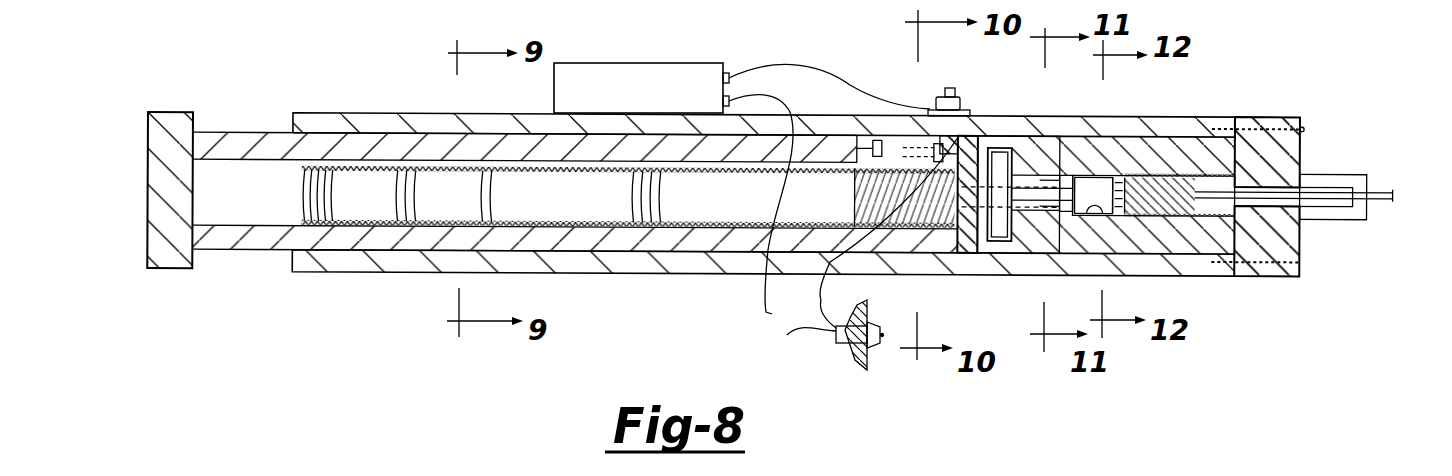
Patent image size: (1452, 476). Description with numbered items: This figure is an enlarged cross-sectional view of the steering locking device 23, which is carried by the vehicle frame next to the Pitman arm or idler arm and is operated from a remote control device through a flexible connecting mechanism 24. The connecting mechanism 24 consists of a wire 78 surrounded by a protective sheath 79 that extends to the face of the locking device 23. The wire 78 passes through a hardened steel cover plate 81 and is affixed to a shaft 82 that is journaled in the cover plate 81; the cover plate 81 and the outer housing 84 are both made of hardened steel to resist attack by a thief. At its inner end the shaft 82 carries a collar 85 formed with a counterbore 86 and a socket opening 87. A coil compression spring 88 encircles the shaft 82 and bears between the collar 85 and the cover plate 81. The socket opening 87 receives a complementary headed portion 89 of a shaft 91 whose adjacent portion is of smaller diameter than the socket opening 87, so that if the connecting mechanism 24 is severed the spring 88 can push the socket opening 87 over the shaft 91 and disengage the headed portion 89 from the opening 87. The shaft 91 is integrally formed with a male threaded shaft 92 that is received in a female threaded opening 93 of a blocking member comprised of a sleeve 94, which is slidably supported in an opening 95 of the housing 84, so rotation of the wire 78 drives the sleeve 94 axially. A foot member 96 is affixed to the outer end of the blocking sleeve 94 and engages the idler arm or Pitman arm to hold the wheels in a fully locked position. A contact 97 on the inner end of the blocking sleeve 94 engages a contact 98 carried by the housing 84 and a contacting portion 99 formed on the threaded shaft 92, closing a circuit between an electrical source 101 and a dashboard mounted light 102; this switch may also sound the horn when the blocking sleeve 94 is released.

The locking device 23 is at (843, 12).
The connecting mechanism 24 is at (1341, 149).
The wire 78 is at (1385, 194).
The protective sheath 79 is at (1360, 173).
The cover plate 81 is at (1273, 117).
The shaft 82 is at (1303, 147).
The outer housing 84 is at (1172, 114).
The collar 85 is at (1093, 176).
The counterbore 86 is at (1100, 214).
The socket opening 87 is at (1053, 214).
The coil compression spring 88 is at (1220, 220).
The headed portion 89 is at (1060, 176).
The shaft 91 is at (1026, 178).
The male threaded shaft 92 is at (930, 240).
The female threaded opening 93 is at (693, 210).
The blocking sleeve 94 is at (247, 130).
The opening 95 is at (341, 137).
The foot member 96 is at (174, 110).
The contact 97 is at (878, 142).
The contact 98 is at (959, 136).
The contacting portion 99 is at (976, 140).
The electrical source 101 is at (654, 28).
The dashboard mounted light 102 is at (884, 335).